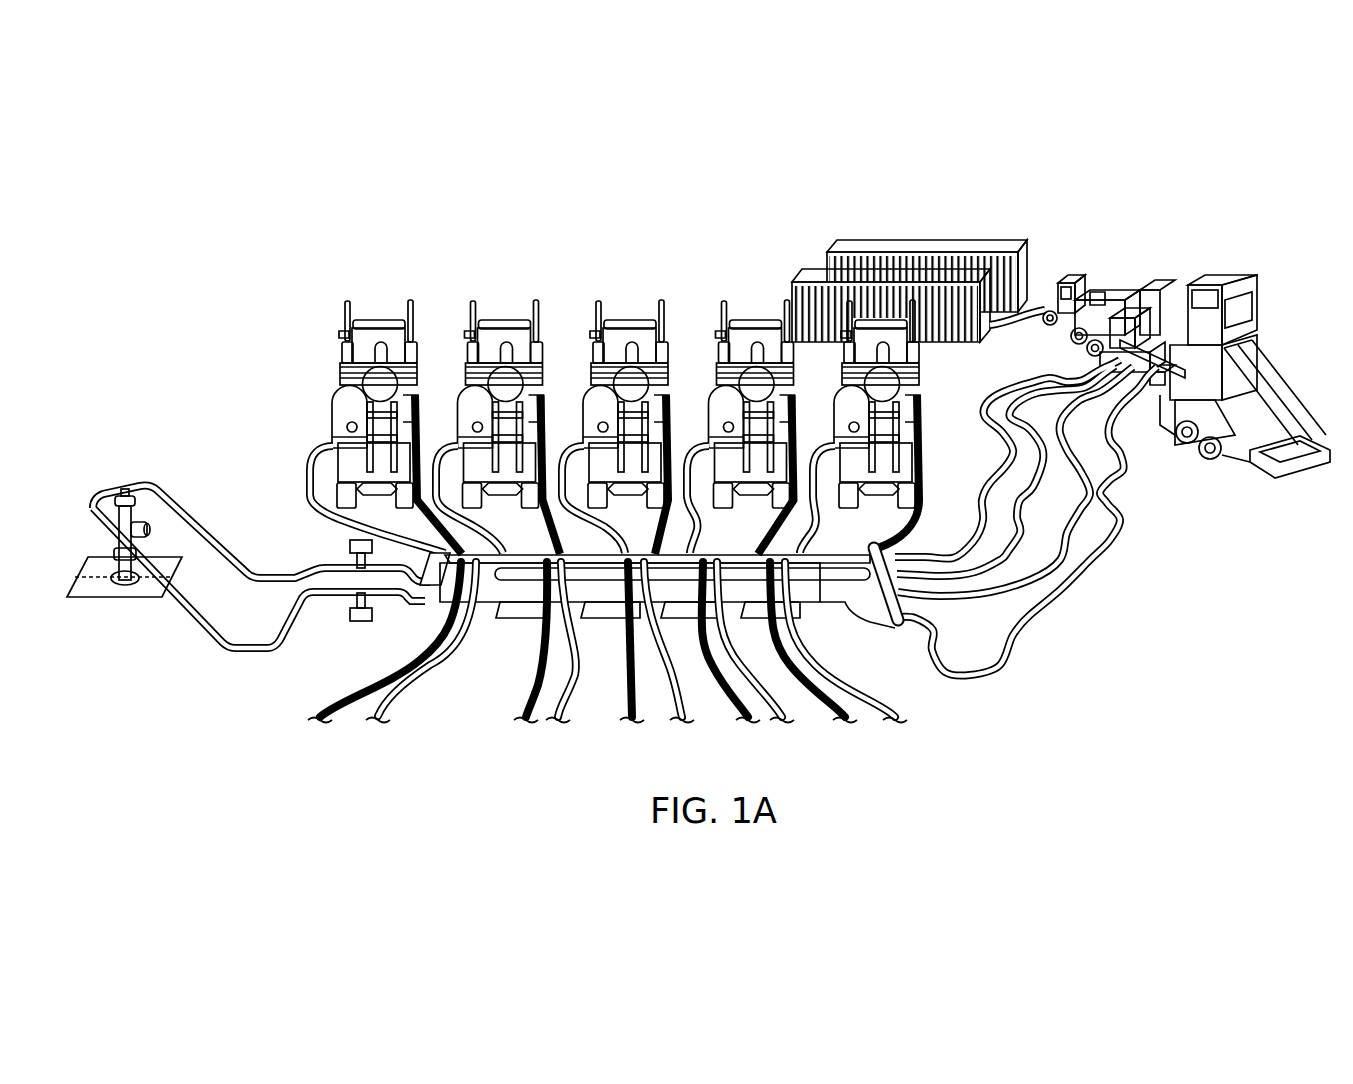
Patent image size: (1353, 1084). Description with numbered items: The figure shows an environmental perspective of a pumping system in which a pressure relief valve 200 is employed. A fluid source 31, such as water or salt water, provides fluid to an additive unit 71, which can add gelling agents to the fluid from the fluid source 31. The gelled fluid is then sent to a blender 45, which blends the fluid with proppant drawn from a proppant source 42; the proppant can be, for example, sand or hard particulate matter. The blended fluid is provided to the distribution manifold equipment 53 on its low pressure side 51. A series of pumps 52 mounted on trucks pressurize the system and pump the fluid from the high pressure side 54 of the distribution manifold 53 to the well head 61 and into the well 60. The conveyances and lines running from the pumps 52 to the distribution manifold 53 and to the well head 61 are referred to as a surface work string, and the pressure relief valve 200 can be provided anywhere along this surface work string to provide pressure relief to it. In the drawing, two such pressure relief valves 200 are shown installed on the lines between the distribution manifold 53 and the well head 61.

The fluid source 31 is at (895, 246).
The proppant source 42 is at (1257, 340).
The blender 45 is at (1157, 280).
The low pressure side 51 is at (893, 636).
The pumps 52 is at (378, 300).
The distribution manifold equipment 53 is at (590, 698).
The high pressure side 54 is at (408, 608).
The well 60 is at (120, 600).
The well head 61 is at (118, 494).
The additive unit 71 is at (1128, 275).
The pressure relief valve 200 is at (348, 546).